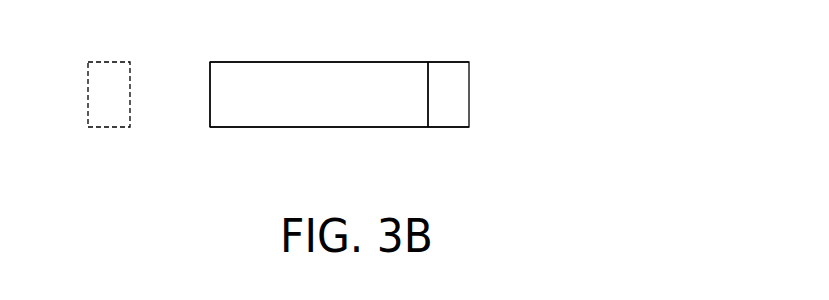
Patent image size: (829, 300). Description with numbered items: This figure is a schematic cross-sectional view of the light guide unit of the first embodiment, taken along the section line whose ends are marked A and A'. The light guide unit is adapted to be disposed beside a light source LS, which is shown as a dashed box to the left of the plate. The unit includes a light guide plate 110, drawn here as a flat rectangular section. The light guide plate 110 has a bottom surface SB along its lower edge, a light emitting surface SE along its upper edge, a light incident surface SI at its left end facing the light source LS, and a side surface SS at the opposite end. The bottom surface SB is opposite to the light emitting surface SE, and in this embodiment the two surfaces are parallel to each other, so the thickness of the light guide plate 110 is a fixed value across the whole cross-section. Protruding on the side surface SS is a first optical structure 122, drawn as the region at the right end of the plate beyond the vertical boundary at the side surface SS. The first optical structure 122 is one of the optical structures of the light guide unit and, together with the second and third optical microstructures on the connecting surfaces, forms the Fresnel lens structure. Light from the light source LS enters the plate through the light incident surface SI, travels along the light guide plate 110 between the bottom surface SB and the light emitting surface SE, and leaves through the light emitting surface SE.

The light guide plate 110 is at (310, 107).
The first optical structure 122 is at (459, 98).
The light source LS is at (88, 89).
The light emitting surface SE is at (235, 62).
The light incident surface SI is at (209, 92).
The bottom surface SB is at (235, 128).
The side surface SS is at (439, 89).
The section line endpoint A is at (207, 13).
The section line endpoint A' is at (487, 11).